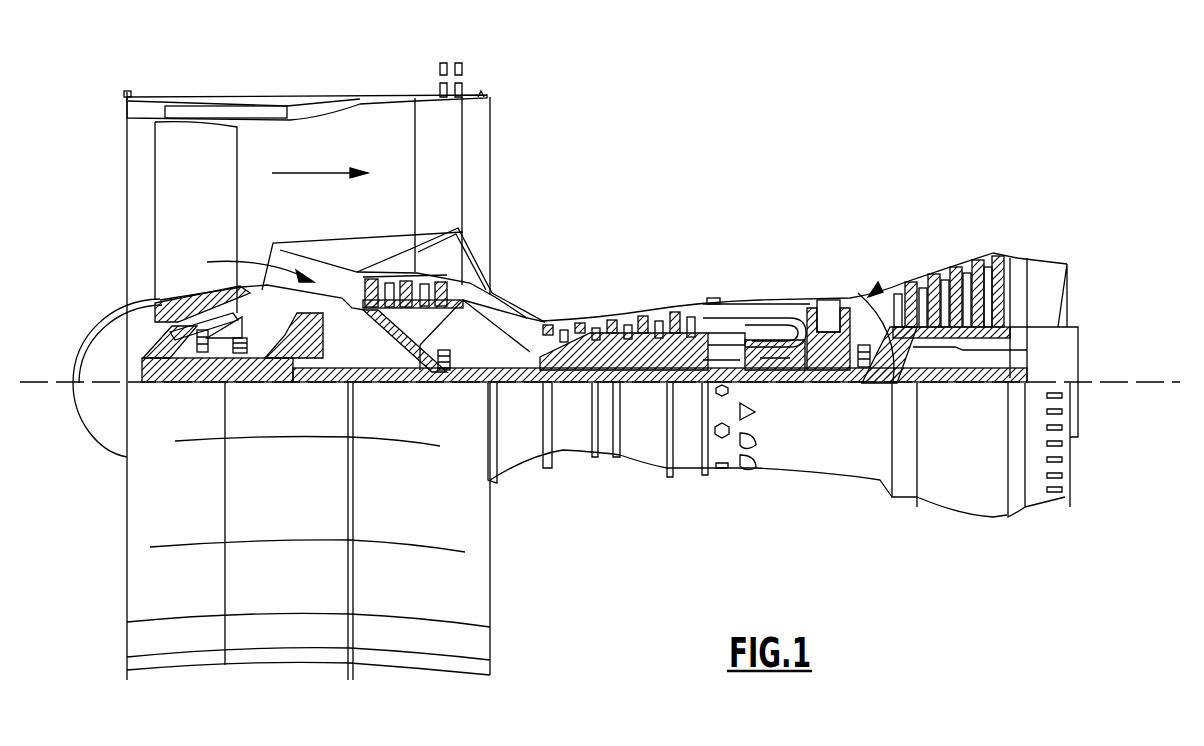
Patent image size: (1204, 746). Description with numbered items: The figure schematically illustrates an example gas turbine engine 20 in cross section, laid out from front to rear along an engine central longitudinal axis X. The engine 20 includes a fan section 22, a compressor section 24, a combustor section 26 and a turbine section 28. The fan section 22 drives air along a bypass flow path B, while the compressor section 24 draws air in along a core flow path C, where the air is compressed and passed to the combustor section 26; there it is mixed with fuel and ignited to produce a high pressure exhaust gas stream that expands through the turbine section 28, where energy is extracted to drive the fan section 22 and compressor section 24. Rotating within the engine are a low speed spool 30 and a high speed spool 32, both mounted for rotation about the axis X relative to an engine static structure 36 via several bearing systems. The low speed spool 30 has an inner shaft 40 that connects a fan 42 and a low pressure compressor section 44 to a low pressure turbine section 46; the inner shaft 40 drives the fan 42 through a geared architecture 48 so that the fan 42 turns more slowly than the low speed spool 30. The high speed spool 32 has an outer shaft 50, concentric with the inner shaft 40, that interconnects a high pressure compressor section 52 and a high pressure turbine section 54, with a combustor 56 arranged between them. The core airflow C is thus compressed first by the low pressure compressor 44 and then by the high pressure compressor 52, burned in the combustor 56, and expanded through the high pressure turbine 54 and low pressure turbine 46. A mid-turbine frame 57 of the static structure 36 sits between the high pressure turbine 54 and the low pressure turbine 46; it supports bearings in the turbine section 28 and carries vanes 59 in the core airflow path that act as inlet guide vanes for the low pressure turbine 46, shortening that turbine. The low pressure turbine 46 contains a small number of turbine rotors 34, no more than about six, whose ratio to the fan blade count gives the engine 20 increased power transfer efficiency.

The gas turbine engine 20 is at (768, 151).
The fan section 22 is at (335, 73).
The compressor section 24 is at (347, 217).
The combustor section 26 is at (800, 217).
The turbine section 28 is at (1022, 217).
The low speed spool 30 is at (645, 384).
The high speed spool 32 is at (685, 343).
The turbine rotors 34 is at (958, 348).
The engine static structure 36 is at (687, 465).
The inner shaft 40 is at (512, 383).
The fan 42 is at (211, 226).
The low pressure compressor section 44 is at (425, 283).
The low pressure turbine section 46 is at (953, 277).
The geared architecture 48 is at (317, 367).
The outer shaft 50 is at (770, 372).
The high pressure compressor section 52 is at (622, 352).
The high pressure turbine section 54 is at (823, 335).
The combustor 56 is at (762, 328).
The mid-turbine frame 57 is at (873, 288).
The vanes 59 is at (910, 343).
The bypass flow path B is at (313, 173).
The core flow path C is at (252, 262).
The engine central longitudinal axis X is at (1163, 382).